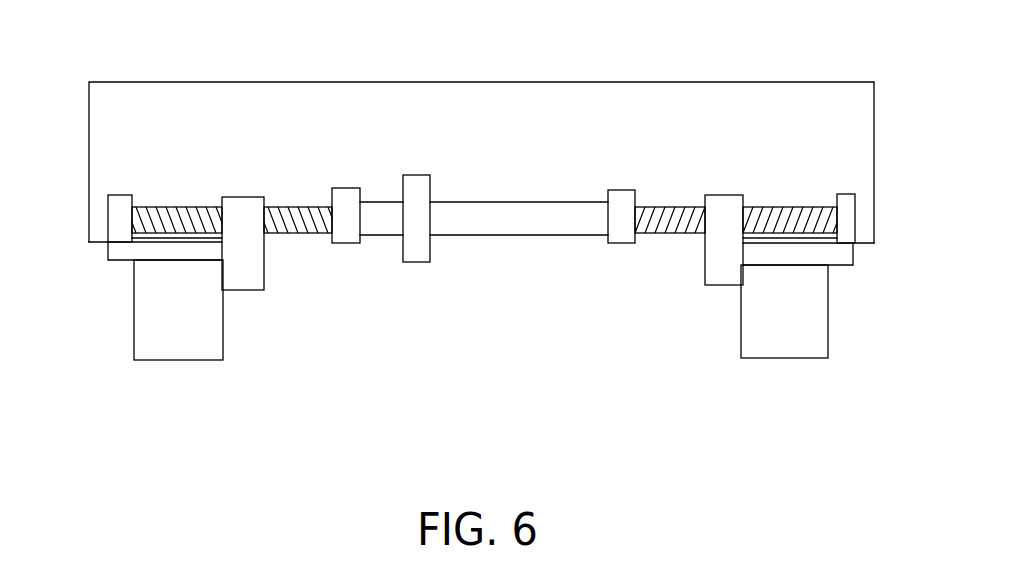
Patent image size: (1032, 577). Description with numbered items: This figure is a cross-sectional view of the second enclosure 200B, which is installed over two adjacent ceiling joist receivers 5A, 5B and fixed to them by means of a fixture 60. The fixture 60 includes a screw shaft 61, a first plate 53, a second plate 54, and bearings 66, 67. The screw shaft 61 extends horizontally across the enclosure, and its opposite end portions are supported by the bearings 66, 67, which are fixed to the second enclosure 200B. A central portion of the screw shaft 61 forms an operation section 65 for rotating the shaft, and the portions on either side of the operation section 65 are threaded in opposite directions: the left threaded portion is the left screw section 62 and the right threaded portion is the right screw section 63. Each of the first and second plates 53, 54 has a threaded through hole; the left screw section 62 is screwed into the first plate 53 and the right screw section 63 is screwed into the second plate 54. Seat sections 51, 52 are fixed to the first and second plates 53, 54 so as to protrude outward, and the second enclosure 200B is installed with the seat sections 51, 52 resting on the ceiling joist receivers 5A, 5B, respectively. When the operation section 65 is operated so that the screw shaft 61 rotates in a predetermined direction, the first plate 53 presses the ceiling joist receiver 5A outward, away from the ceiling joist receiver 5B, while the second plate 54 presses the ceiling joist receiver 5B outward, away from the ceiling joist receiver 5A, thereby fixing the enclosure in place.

The second enclosure 200B is at (257, 81).
The seat section 51 is at (117, 250).
The seat section 52 is at (842, 255).
The ceiling joist receiver 5A is at (135, 313).
The ceiling joist receiver 5B is at (830, 313).
The first plate 53 is at (247, 272).
The second plate 54 is at (713, 270).
The fixture 60 is at (484, 275).
The screw shaft 61 is at (512, 236).
The left screw section 62 is at (185, 206).
The right screw section 63 is at (780, 199).
The operation section 65 is at (415, 174).
The bearing 66 is at (122, 195).
The bearing 67 is at (845, 194).